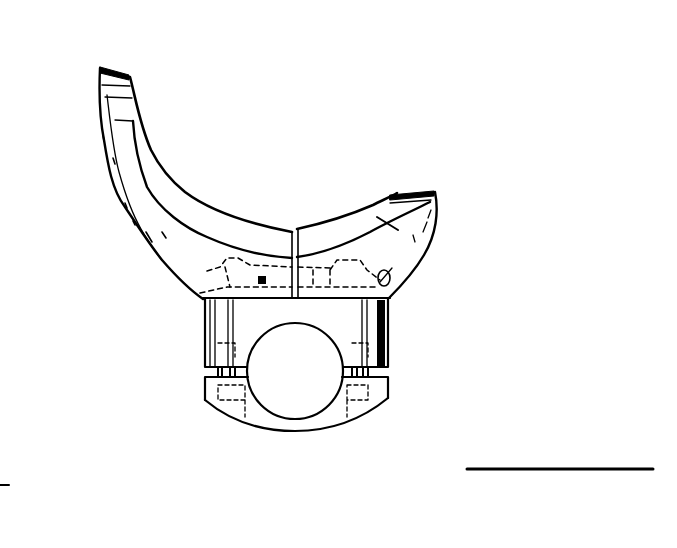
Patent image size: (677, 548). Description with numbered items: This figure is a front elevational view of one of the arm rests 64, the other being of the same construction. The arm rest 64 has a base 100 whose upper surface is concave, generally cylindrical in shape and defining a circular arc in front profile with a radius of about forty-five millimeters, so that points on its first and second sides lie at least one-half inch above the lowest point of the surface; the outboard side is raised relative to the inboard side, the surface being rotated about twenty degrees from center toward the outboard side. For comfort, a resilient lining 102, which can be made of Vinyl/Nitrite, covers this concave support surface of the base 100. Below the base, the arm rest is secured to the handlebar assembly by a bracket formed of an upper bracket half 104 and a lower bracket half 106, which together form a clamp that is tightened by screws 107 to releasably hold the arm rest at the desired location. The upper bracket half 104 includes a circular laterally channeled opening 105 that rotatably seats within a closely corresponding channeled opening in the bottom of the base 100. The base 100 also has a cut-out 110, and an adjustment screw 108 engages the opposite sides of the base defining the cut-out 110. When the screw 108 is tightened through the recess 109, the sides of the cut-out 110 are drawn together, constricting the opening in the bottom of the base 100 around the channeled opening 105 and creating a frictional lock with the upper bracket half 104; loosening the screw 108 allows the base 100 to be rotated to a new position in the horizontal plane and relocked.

The arm rest 64 is at (288, 110).
The base 100 is at (147, 213).
The resilient lining 102 is at (168, 185).
The upper bracket half 104 is at (388, 304).
The circular laterally channeled opening 105 is at (207, 271).
The lower bracket half 106 is at (296, 429).
The screws 107 is at (202, 340).
The adjustment screw 108 is at (200, 293).
The recess 109 is at (393, 271).
The cut-out 110 is at (295, 228).